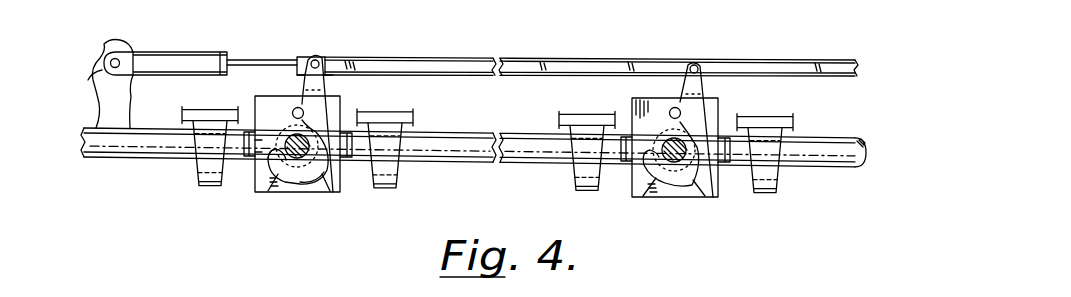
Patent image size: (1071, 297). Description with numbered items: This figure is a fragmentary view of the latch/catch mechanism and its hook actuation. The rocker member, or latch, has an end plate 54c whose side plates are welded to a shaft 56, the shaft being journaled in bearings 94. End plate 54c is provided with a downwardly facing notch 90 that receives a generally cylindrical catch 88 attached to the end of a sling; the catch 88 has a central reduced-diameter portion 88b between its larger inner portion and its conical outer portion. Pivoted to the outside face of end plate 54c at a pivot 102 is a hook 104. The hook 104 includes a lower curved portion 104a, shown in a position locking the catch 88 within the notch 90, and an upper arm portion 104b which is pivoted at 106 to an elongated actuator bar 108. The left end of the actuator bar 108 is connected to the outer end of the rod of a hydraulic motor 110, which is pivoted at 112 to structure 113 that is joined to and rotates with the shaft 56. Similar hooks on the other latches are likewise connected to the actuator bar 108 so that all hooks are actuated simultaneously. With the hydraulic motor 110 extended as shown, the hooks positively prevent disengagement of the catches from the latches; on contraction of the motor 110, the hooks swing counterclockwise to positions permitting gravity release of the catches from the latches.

The end plate 54c is at (262, 172).
The shaft 56 is at (457, 158).
The catch 88 is at (292, 158).
The central reduced-diameter portion 88b is at (309, 184).
The notch 90 is at (284, 139).
The bearings 94 is at (200, 172).
The pivot 102 is at (295, 107).
The hook 104 is at (327, 143).
The lower curved portion 104a is at (298, 178).
The upper arm portion 104b is at (323, 68).
The pivot 106 is at (313, 59).
The actuator bar 108 is at (452, 65).
The hydraulic motor 110 is at (185, 77).
The pivot 112 is at (99, 84).
The structure 113 is at (97, 57).